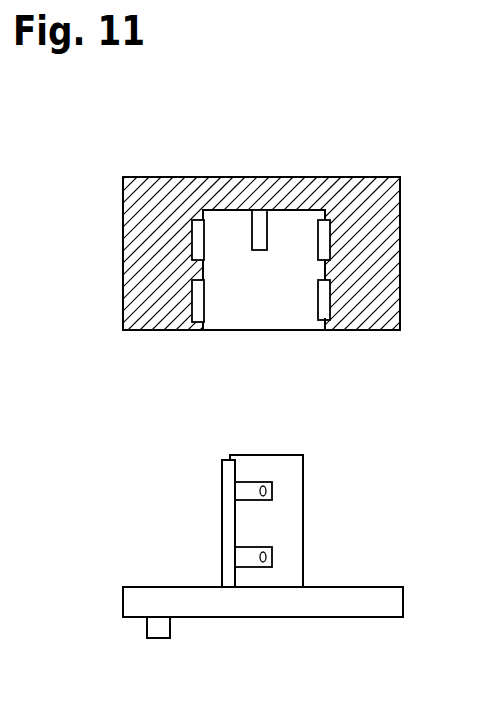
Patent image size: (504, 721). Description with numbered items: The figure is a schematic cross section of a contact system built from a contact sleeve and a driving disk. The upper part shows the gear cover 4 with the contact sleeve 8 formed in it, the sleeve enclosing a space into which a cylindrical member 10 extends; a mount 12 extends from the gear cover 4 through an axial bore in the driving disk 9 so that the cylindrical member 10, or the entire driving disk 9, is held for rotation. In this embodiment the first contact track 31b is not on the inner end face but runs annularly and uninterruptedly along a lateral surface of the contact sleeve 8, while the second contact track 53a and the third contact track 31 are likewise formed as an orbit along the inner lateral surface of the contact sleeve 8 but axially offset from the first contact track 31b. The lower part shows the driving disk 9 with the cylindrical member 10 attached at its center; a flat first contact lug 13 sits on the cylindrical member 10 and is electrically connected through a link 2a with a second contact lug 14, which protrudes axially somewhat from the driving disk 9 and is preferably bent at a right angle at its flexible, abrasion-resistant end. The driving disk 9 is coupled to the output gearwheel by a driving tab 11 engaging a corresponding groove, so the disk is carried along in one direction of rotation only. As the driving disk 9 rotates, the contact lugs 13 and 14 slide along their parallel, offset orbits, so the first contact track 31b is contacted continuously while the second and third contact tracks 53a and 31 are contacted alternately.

The gear cover 4 is at (362, 190).
The contact sleeve 8 is at (196, 270).
The first contact track 31b is at (196, 237).
The third contact track 31 is at (196, 305).
The mount 12 is at (260, 250).
The second contact track 53a is at (327, 321).
The driving disk 9 is at (372, 610).
The driving tab 11 is at (150, 630).
The cylindrical member 10 is at (293, 548).
The link 2a is at (228, 512).
The first contact lug 13 is at (245, 483).
The second contact lug 14 is at (255, 560).